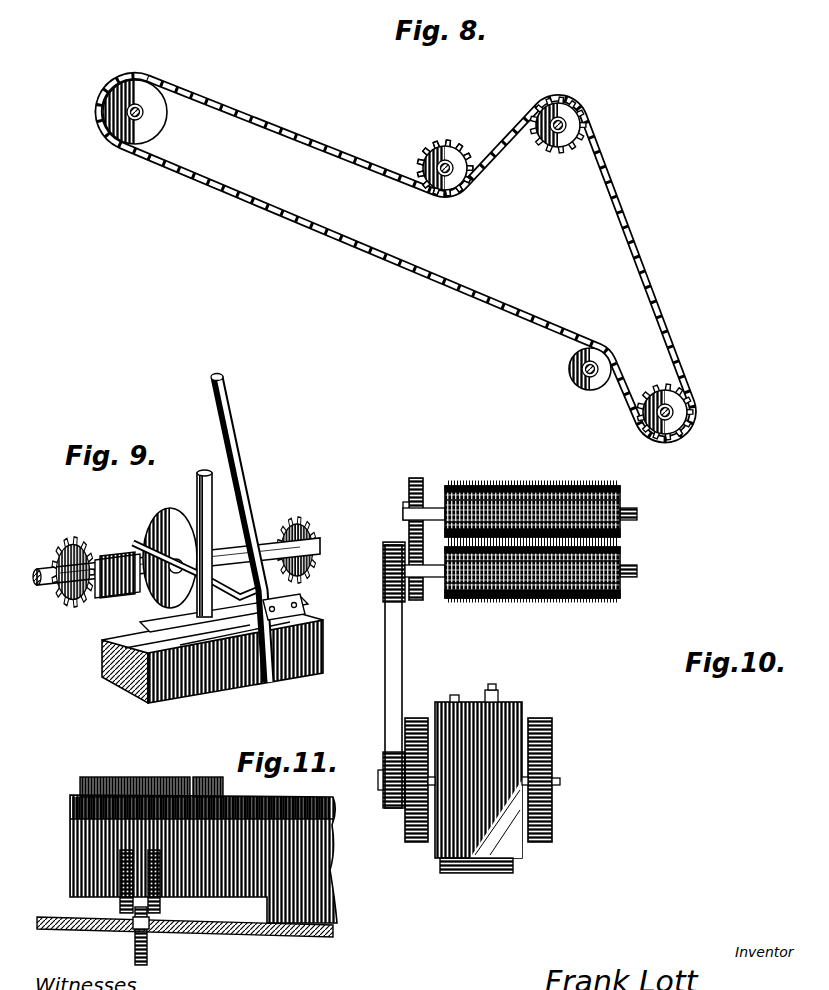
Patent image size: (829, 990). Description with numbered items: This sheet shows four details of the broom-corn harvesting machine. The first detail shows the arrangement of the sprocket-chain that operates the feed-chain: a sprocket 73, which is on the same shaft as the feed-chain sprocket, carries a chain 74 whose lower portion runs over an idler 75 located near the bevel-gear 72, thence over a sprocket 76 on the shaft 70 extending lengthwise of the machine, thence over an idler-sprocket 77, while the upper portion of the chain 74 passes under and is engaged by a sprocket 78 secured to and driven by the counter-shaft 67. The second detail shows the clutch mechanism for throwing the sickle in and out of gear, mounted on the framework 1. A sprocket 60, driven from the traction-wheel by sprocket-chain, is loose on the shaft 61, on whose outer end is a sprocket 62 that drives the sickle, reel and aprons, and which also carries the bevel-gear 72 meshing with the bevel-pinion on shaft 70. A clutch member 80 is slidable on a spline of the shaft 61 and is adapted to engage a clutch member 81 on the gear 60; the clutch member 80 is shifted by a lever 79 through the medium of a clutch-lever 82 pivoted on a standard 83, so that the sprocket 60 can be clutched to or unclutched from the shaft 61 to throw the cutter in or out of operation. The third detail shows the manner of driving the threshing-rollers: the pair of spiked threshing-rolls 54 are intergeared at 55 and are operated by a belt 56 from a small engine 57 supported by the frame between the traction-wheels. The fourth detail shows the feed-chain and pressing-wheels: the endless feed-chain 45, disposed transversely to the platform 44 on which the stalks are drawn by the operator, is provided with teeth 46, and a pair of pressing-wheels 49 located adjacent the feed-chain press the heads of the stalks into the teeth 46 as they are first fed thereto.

In FIG. 8, the sprocket 73 is at (160, 114).
In FIG. 8, the chain 74 is at (350, 248).
In FIG. 8, the sprocket 78 is at (458, 150).
In FIG. 8, the counter-shaft 67 is at (438, 180).
In FIG. 8, the idler-sprocket 77 is at (563, 150).
In FIG. 8, the idler 75 is at (586, 390).
In FIG. 8, the sprocket 76 is at (683, 424).
In FIG. 8, the shaft 70 is at (672, 410).
In FIG. 9, the framework 1 is at (193, 697).
In FIG. 9, the sprocket 60 is at (78, 612).
In FIG. 9, the shaft 61 is at (262, 530).
In FIG. 9, the sprocket 62 is at (312, 545).
In FIG. 9, the bevel-gear 72 is at (167, 512).
In FIG. 9, the lever 79 is at (243, 447).
In FIG. 9, the clutch member 80 is at (128, 550).
In FIG. 9, the clutch member 81 is at (183, 586).
In FIG. 9, the clutch-lever 82 is at (188, 584).
In FIG. 9, the standard 83 is at (199, 470).
In FIG. 10, the threshing-rolls 54 is at (622, 530).
In FIG. 10, the gearing 55 is at (424, 484).
In FIG. 10, the belt 56 is at (404, 664).
In FIG. 10, the small engine 57 is at (515, 718).
In FIG. 11, the platform 44 is at (242, 933).
In FIG. 11, the feed-chain 45 is at (147, 947).
In FIG. 11, the teeth 46 is at (132, 939).
In FIG. 11, the pressing-wheels 49 is at (154, 850).